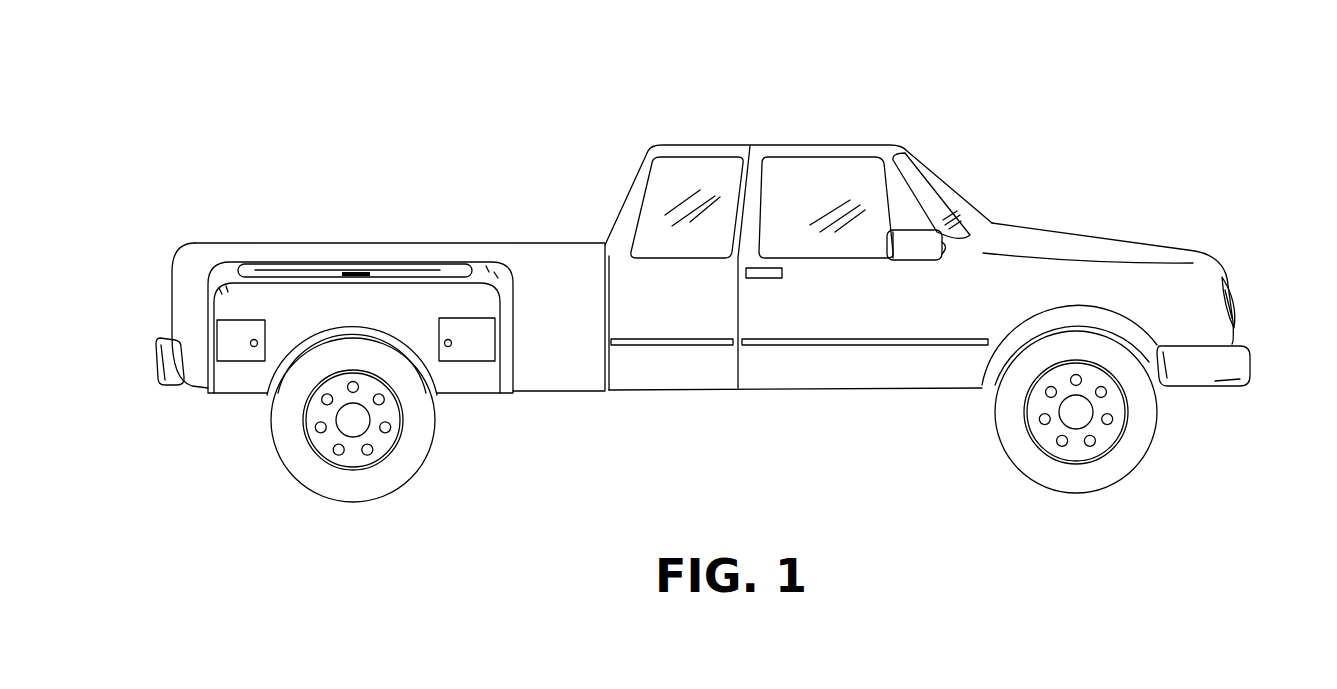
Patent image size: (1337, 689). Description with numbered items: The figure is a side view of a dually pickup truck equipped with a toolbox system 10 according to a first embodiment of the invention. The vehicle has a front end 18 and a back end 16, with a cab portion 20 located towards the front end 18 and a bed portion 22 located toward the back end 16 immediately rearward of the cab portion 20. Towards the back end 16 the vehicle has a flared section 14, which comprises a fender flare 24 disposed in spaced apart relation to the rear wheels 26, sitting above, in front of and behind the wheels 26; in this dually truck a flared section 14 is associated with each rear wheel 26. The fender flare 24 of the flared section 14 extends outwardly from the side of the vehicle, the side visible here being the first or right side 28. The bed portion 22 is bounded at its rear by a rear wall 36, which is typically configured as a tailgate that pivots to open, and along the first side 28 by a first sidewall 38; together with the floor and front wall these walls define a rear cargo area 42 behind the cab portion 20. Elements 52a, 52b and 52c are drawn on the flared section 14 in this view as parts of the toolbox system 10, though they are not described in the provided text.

The toolbox system 10 is at (249, 421).
The flared section 14 is at (465, 387).
The back end 16 is at (139, 373).
The front end 18 is at (1253, 389).
The cab portion 20 is at (845, 135).
The bed portion 22 is at (299, 221).
The fender flare 24 is at (237, 290).
The wheels 26 is at (351, 504).
The first or right side 28 is at (621, 403).
The rear wall 36 is at (167, 290).
The first sidewall 38 is at (560, 257).
The rear cargo area 42 is at (442, 227).
The upper storage compartment 52a is at (323, 270).
The front access door 52b is at (489, 344).
The rear access door 52c is at (244, 342).